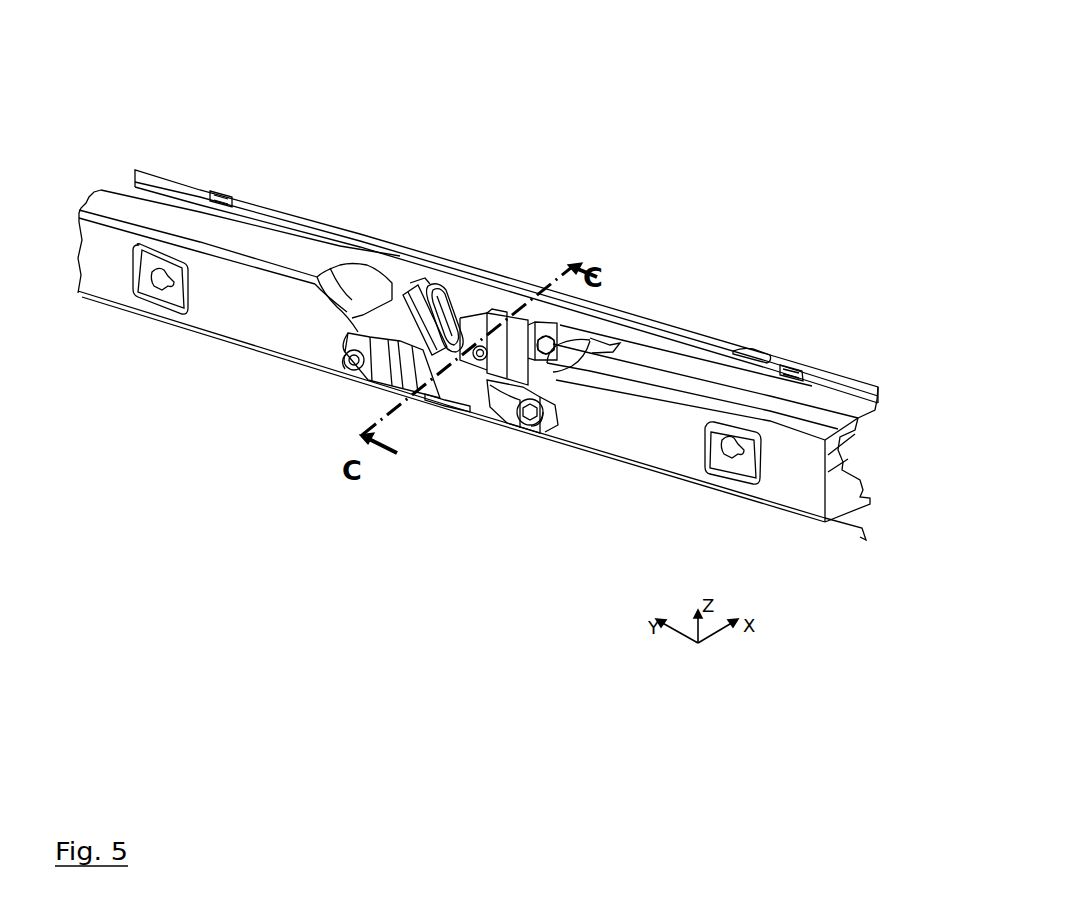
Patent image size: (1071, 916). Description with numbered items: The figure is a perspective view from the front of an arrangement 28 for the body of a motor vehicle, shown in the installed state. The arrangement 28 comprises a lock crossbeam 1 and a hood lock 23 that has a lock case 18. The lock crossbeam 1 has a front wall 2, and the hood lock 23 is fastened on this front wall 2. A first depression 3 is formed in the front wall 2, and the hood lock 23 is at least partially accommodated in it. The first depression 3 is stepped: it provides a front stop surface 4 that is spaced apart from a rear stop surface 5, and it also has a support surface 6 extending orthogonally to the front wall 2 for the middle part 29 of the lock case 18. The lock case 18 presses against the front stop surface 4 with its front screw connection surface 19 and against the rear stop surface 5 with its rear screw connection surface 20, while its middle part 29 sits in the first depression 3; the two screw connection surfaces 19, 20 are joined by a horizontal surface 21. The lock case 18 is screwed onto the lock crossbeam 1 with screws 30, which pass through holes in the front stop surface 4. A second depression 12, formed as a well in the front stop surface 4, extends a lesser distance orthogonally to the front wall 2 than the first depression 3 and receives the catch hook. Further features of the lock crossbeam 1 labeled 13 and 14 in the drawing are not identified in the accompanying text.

The lock crossbeam 1 is at (773, 385).
The front wall 2 is at (451, 307).
The first depression 3 is at (378, 288).
The front stop surface 4 is at (558, 420).
The rear stop surface 5 is at (573, 343).
The support surface 6 is at (302, 465).
The second depression 12 is at (442, 410).
The upper wall of cross member 13 is at (250, 232).
The rail 14 is at (175, 186).
The lock case 18 is at (488, 402).
The front screw connection surface 19 is at (375, 378).
The rear screw connection surface 20 is at (550, 330).
The horizontal surface 21 is at (400, 345).
The hood lock 23 is at (465, 283).
The arrangement 28 is at (338, 608).
The middle part 29 is at (480, 317).
The screws 30 is at (353, 360).